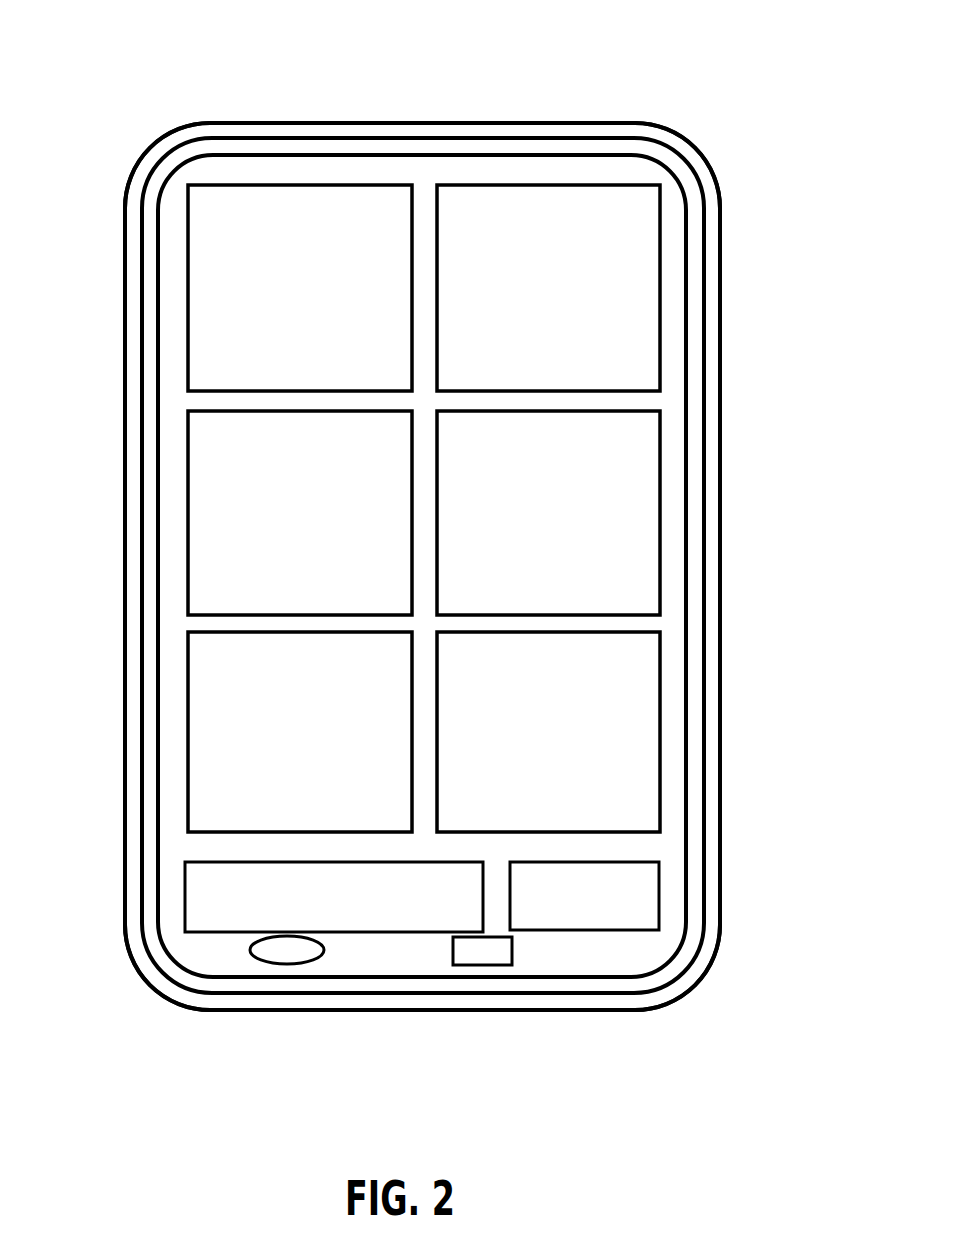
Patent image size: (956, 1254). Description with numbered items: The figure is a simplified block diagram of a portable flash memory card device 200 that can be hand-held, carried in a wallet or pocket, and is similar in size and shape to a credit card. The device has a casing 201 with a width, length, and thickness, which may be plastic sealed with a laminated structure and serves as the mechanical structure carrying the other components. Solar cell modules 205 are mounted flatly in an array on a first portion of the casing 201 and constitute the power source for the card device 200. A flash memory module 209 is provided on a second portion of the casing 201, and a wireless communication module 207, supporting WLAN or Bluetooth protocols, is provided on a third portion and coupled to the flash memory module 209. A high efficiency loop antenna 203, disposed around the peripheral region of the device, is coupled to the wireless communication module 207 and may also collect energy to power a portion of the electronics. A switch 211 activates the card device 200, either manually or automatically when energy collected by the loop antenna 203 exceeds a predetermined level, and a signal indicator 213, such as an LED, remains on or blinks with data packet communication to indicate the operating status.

The memory card device 200 is at (676, 48).
The casing 201 is at (703, 962).
The loop antenna 203 is at (693, 248).
The solar cell modules 205 is at (633, 528).
The wireless communication module 207 is at (207, 878).
The flash memory module 209 is at (645, 880).
The switch 211 is at (287, 950).
The signal indicator 213 is at (483, 957).